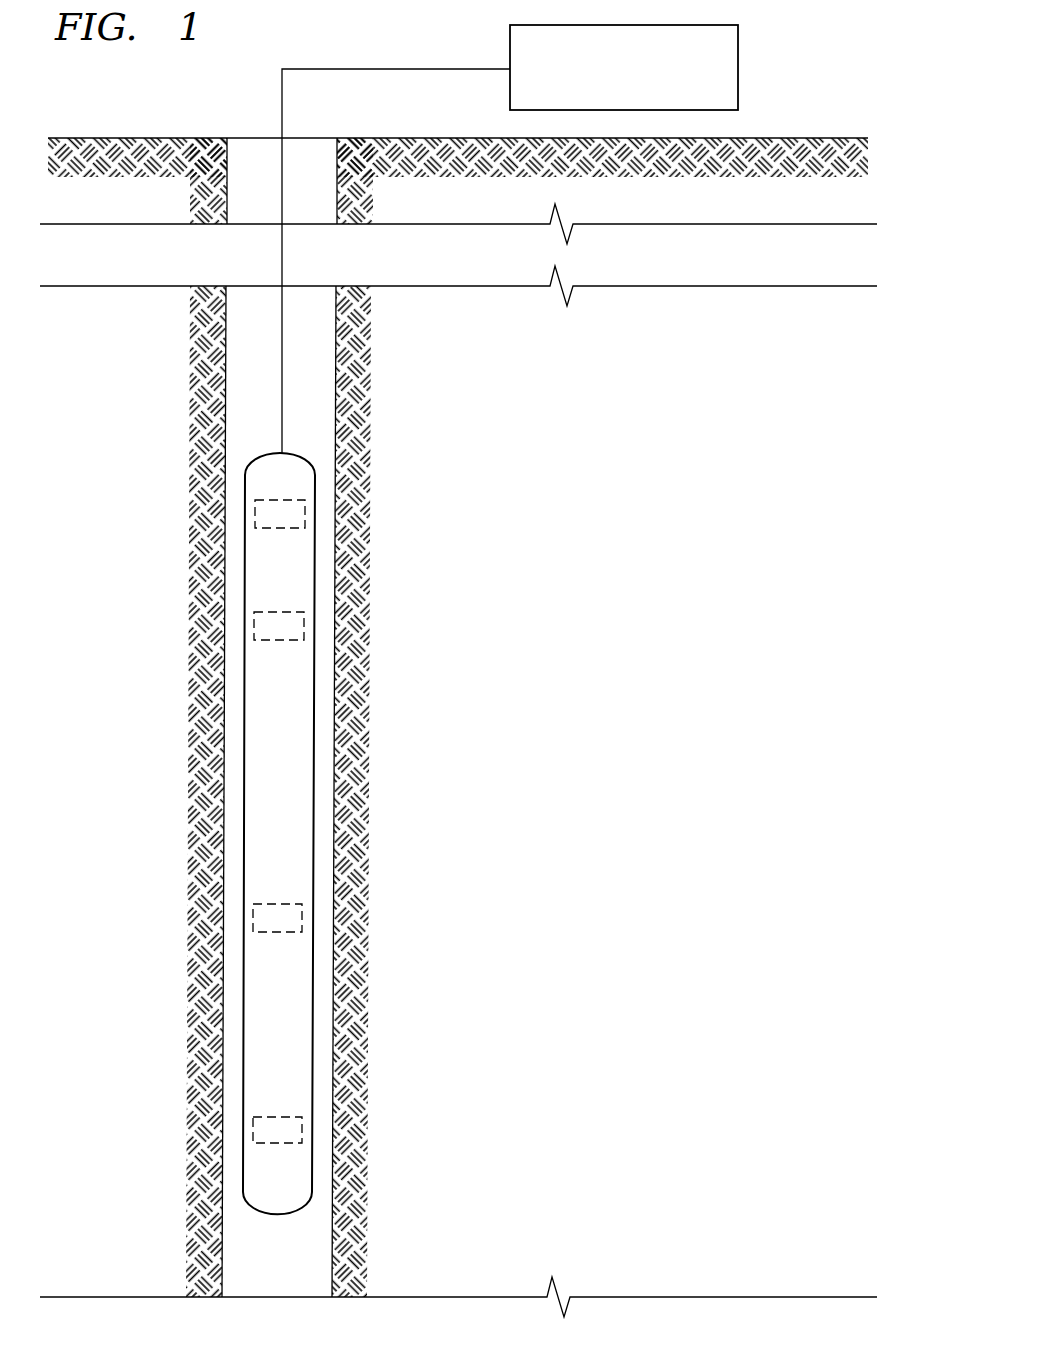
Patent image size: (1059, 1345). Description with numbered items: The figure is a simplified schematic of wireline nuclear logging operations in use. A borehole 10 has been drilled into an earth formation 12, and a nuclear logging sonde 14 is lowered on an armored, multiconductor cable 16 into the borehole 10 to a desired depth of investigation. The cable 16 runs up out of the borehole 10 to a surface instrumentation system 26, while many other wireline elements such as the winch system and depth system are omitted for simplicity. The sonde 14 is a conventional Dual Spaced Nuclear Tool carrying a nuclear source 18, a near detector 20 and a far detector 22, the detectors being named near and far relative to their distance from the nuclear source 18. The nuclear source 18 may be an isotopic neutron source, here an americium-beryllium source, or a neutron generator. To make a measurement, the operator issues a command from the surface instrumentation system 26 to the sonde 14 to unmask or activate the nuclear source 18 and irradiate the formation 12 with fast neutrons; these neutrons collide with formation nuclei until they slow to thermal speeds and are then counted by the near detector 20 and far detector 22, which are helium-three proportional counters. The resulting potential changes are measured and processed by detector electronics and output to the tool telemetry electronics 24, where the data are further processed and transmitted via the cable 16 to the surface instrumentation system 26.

The borehole 10 is at (315, 416).
The earth formation 12 is at (620, 708).
The nuclear logging sonde 14 is at (300, 810).
The armored multiconductor cable 16 is at (282, 364).
The nuclear source 18 is at (302, 1132).
The near detector 20 is at (302, 921).
The far detector 22 is at (304, 630).
The tool telemetry electronics 24 is at (305, 518).
The surface instrumentation system 26 is at (673, 25).